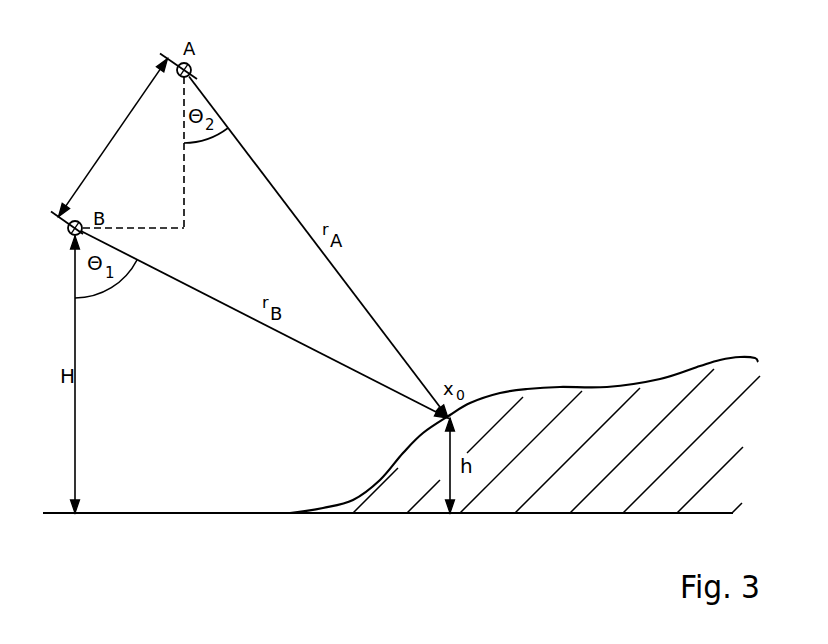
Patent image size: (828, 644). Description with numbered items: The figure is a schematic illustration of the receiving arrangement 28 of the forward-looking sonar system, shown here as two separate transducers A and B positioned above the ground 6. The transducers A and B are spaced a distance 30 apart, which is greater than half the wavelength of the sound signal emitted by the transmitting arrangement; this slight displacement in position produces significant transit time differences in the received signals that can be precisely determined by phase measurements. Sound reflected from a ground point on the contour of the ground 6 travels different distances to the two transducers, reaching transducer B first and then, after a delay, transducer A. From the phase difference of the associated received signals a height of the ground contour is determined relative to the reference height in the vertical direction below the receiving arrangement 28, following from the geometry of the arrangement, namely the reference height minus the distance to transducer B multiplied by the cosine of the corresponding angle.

The receiving arrangement 28 is at (192, 66).
The distance 30 is at (119, 128).
The ground 6 is at (607, 387).